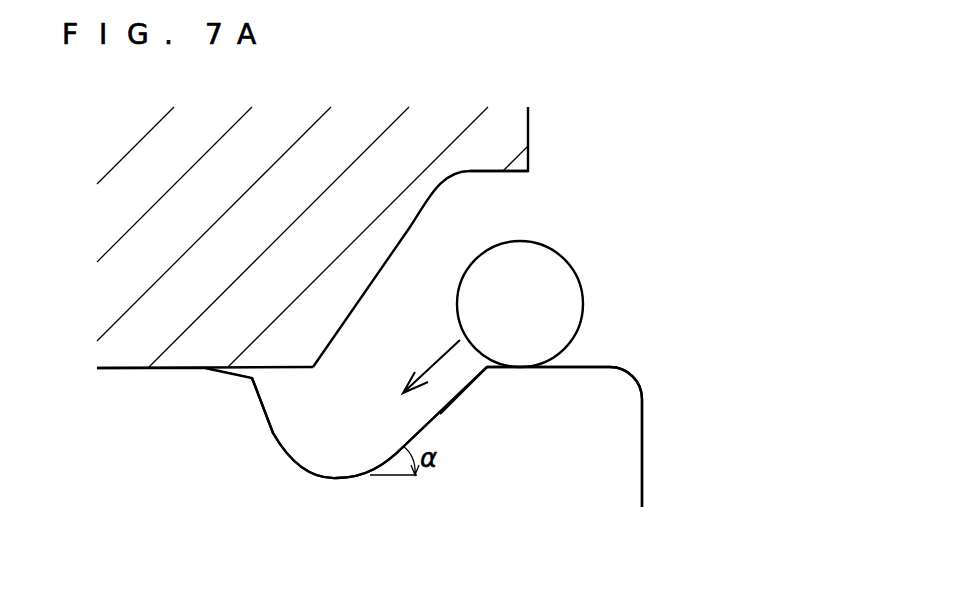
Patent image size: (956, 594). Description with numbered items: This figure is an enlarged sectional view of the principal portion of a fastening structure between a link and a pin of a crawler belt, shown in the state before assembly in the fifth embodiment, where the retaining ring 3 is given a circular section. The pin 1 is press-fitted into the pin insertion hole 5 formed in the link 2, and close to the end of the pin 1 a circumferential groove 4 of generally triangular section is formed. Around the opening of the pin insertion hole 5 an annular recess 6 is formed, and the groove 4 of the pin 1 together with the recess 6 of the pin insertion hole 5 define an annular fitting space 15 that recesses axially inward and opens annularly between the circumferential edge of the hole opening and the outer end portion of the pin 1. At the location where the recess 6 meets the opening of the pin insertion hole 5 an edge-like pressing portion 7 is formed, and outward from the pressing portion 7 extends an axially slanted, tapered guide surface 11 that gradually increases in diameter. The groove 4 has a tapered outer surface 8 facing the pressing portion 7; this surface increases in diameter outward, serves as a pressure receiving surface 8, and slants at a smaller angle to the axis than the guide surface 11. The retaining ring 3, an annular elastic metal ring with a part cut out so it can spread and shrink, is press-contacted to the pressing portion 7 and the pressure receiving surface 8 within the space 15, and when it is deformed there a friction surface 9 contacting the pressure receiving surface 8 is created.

The pin 1 is at (182, 521).
The link 2 is at (113, 110).
The retaining ring 3 is at (547, 302).
The circumferential groove 4 is at (320, 470).
The pin insertion hole 5 is at (116, 368).
The annular recess 6 is at (500, 171).
The pressing portion 7 is at (313, 368).
The tapered outer surface (pressure receiving surface) 8 is at (462, 390).
The friction surface 9 is at (428, 422).
The guide surface 11 is at (413, 225).
The annular fitting space 15 is at (613, 343).